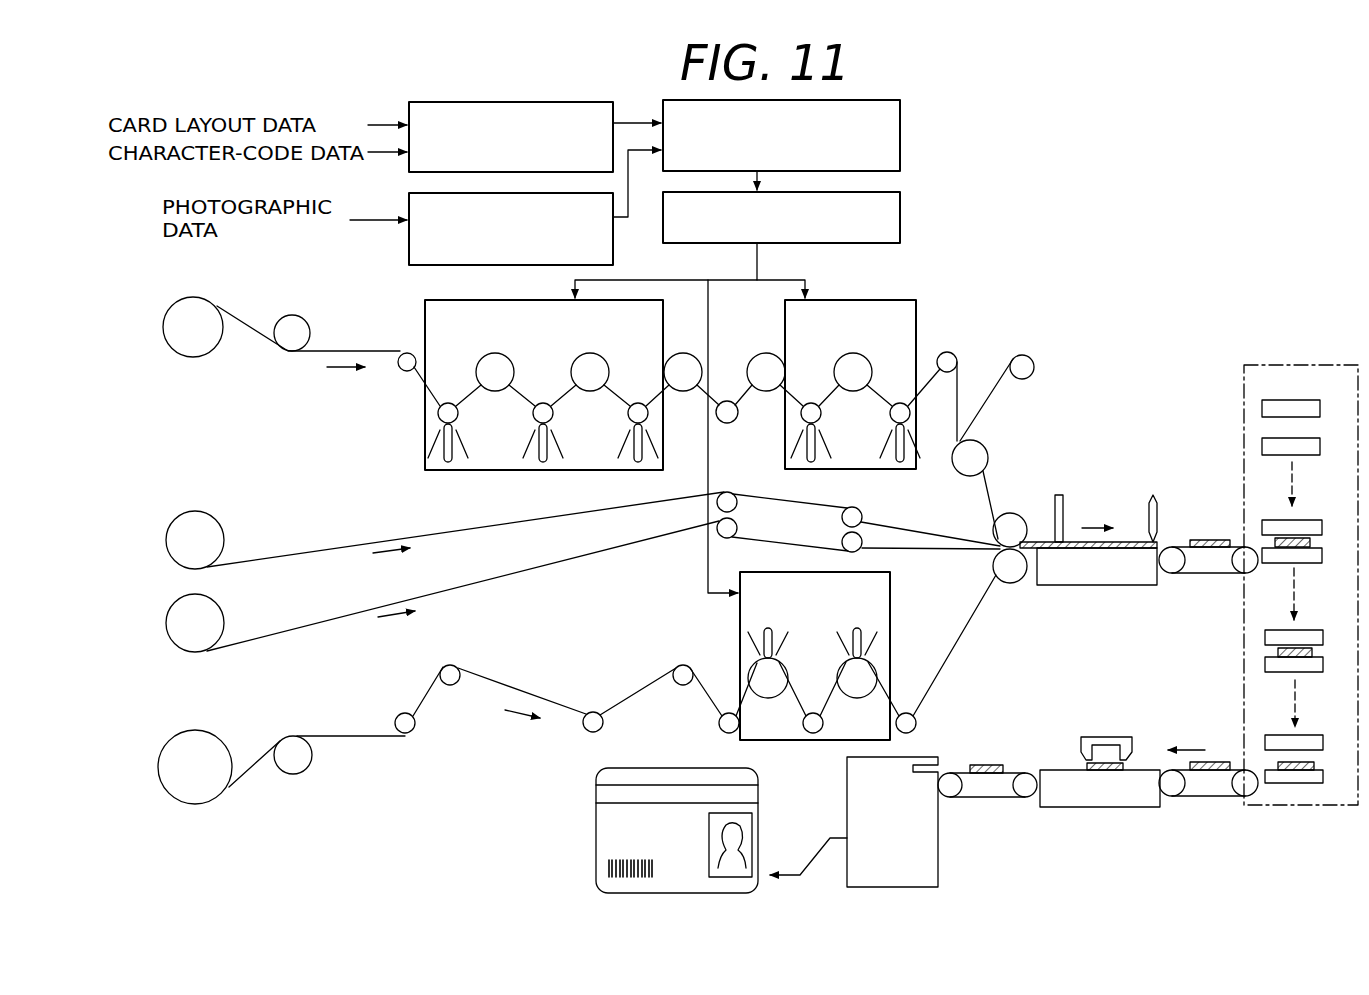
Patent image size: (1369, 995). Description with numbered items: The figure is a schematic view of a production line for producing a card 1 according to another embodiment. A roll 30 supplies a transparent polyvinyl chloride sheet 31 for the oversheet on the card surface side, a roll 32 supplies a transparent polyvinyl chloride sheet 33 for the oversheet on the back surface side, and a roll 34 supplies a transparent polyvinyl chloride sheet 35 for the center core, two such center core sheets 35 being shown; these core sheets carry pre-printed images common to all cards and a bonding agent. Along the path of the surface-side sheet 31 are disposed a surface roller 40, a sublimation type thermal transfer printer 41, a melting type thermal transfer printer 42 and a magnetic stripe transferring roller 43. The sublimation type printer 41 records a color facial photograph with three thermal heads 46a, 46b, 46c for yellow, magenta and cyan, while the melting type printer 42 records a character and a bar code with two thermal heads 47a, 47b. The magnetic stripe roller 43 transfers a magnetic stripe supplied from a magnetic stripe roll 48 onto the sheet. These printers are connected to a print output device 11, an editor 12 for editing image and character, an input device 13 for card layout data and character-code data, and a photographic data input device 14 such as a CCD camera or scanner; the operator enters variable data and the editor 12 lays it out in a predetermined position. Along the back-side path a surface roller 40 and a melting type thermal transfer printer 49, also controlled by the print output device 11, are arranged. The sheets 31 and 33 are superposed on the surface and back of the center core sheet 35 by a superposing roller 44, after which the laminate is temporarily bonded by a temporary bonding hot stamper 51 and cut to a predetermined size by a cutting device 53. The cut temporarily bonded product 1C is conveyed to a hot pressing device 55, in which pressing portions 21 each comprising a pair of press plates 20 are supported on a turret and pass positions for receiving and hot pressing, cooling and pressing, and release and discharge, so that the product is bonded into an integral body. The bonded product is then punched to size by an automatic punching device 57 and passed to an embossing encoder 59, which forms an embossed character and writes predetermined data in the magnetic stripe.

The card 1 is at (596, 800).
The temporarily bonded product 1C is at (1205, 538).
The print output device 11 is at (900, 210).
The editor for editing image and character 12 is at (900, 120).
The input device 13 is at (618, 98).
The photographic data input device 14 is at (613, 232).
The press plates 20 is at (1262, 408).
The pressing portion 21 is at (1260, 402).
The roll 30 is at (193, 353).
The polyvinyl chloride sheet 31 is at (362, 348).
The roll 32 is at (213, 792).
The polyvinyl chloride sheet 33 is at (357, 737).
The roll 34 is at (216, 522).
The polyvinyl chloride sheet 35 is at (325, 548).
The surface roller 40 is at (297, 320).
The sublimation type thermal transfer printer 41 is at (541, 388).
The melting type thermal transfer printer 42 is at (852, 386).
The magnetic stripe transferring roller 43 is at (985, 445).
The superposing roller 44 is at (1016, 512).
The thermal head 46a is at (452, 462).
The thermal head 46b is at (540, 462).
The thermal head 46c is at (635, 462).
The thermal head 47a is at (815, 462).
The thermal head 47b is at (897, 462).
The magnetic stripe roll 48 is at (1028, 378).
The melting type thermal transfer printer 49 is at (890, 596).
The temporary bonding hot stamper 51 is at (1063, 500).
The cutting device 53 is at (1153, 495).
The hot pressing device 55 is at (1275, 582).
The automatic punching device 57 is at (1132, 745).
The embossing encoder 59 is at (938, 865).